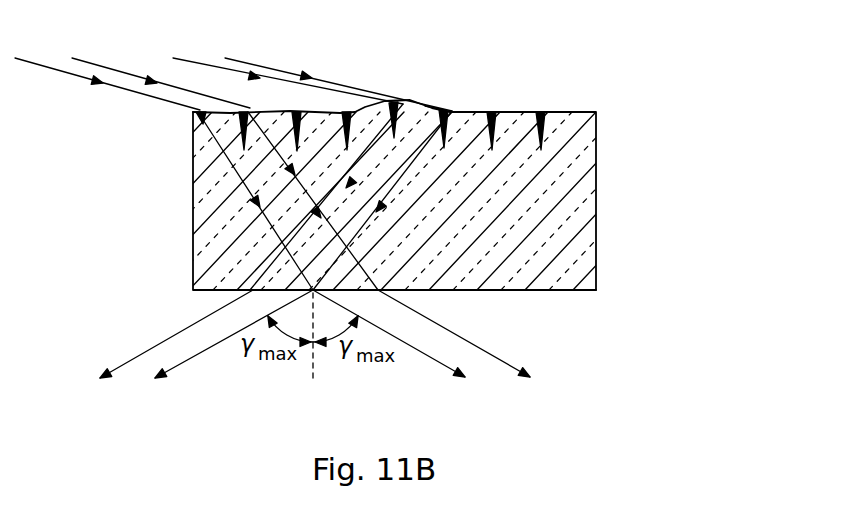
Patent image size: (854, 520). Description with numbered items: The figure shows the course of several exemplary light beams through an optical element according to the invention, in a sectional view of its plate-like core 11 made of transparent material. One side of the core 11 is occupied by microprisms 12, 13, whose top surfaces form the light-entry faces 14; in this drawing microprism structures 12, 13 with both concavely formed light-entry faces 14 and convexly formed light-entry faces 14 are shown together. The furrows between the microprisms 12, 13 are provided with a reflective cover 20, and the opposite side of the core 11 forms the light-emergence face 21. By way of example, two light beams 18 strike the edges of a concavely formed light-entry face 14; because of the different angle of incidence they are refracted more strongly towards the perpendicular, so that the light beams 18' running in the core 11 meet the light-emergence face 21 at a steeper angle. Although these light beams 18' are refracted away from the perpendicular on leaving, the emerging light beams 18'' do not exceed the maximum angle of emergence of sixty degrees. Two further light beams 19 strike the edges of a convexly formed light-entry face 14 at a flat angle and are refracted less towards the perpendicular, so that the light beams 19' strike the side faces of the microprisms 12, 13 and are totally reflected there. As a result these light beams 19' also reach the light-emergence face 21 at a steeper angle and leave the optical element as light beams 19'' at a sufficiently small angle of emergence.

The plate-like core 11 is at (594, 240).
The microprism 12 is at (444, 102).
The microprism 13 is at (598, 117).
The light-entry face 14 is at (431, 111).
The reflective cover 20 is at (494, 112).
The light-emergence face 21 is at (550, 291).
The light beam 18 is at (132, 71).
The light beam 19 is at (312, 71).
The light beam 18' is at (287, 201).
The light beam 19' is at (362, 197).
The emerging light beam 18'' is at (421, 347).
The emerging light beam 19'' is at (206, 346).